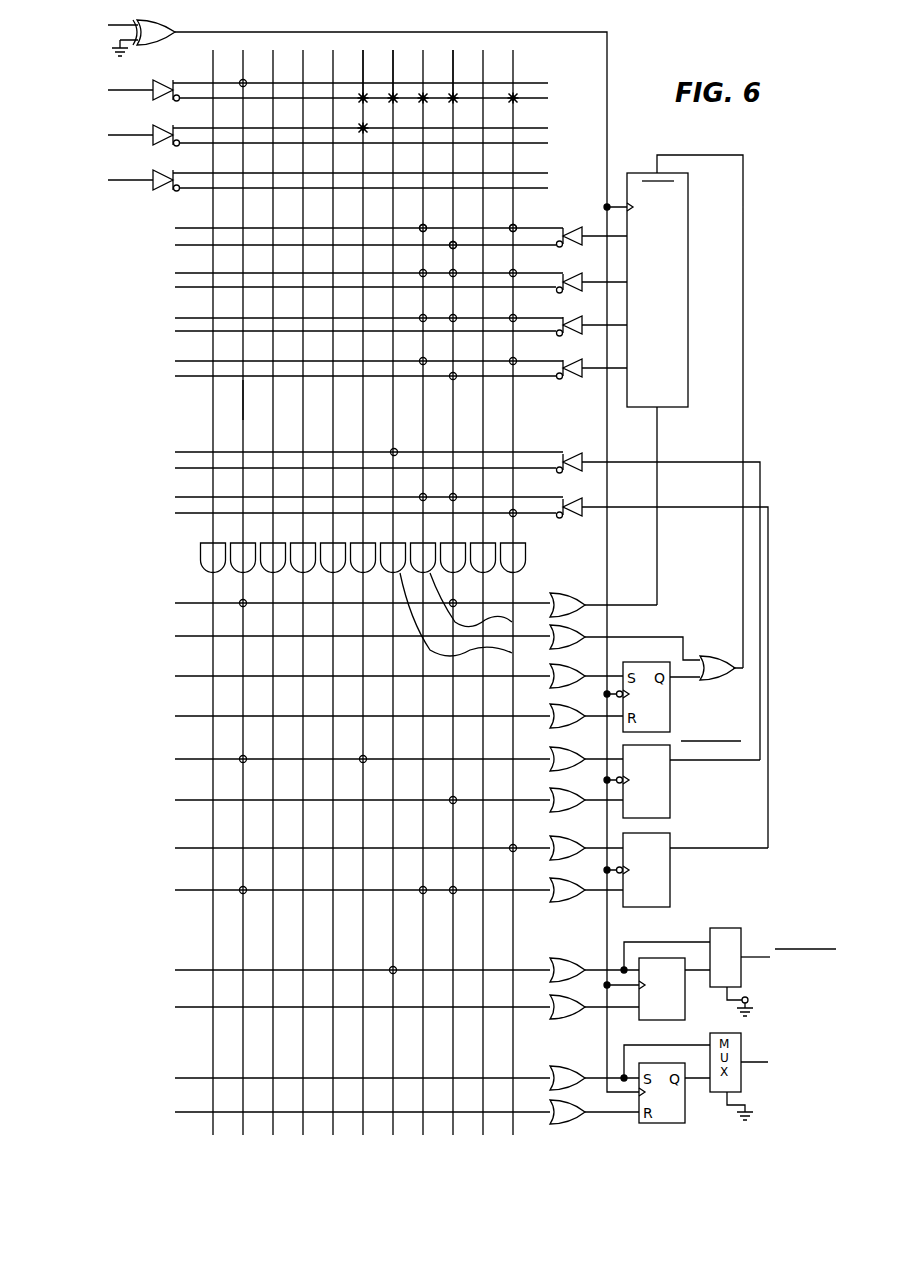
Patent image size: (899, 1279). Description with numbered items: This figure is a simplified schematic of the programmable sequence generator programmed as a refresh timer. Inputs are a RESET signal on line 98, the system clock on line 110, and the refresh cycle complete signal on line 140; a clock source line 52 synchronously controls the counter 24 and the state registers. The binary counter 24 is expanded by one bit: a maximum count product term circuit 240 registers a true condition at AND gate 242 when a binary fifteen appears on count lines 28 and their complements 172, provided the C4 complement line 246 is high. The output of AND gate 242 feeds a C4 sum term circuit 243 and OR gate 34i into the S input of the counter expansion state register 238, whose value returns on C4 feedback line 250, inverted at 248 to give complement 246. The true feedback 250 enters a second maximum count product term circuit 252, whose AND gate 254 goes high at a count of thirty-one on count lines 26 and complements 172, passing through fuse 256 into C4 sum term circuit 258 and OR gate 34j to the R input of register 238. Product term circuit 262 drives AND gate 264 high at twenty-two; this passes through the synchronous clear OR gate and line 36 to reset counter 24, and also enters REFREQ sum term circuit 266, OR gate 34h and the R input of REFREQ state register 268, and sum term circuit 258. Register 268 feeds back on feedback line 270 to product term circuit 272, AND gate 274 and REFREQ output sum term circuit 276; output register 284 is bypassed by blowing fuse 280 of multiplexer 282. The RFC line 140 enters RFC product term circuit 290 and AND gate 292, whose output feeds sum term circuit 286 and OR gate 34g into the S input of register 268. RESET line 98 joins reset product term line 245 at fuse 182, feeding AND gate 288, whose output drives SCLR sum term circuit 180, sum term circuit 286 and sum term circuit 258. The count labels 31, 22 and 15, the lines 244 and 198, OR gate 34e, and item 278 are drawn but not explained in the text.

The system clock signal line 110 is at (119, 26).
The clock source line 52 is at (607, 65).
The RESET signal line 98 is at (104, 91).
The refresh cycle complete signal line 140 is at (116, 136).
The fuse 182 is at (240, 83).
The reset line 244 is at (548, 98).
The maximum count product term circuit 240 is at (512, 118).
The RFC product term circuit 290 is at (363, 52).
The product term circuit 272 is at (393, 54).
The product term circuit 262 is at (453, 54).
The counter 24 is at (688, 272).
The count lines 26 is at (590, 325).
The count lines 28 is at (556, 325).
The second maximum count product term circuit 252 is at (426, 200).
The column 31 is at (430, 220).
The column 22 is at (461, 229).
The column 15 is at (517, 220).
The count line complements 172 is at (500, 335).
The reset product term line 245 is at (243, 398).
The feedback line 270 is at (679, 462).
The C4 feedback line 250 is at (680, 507).
The inverter 248 is at (580, 497).
The C4 complement line 246 is at (546, 513).
The AND gate 242 is at (526, 550).
The AND gate 288 is at (237, 551).
The AND gate 264 is at (462, 572).
The AND gate 292 is at (363, 573).
The AND gate 254 is at (489, 602).
The AND gate 274 is at (474, 618).
The SCLR sum term circuit 180 is at (190, 604).
The line 198 is at (243, 606).
The line 36 is at (658, 574).
The OR gate 34e is at (587, 612).
The REFREQ sum term circuit 286 is at (194, 759).
The REFREQ sum term circuit 266 is at (194, 800).
The C4 sum term circuit 243 is at (194, 848).
The C4 sum term circuit 258 is at (194, 890).
The REFREQ output sum term circuit 276 is at (190, 970).
The OR gate 34g is at (558, 750).
The OR gate 34h is at (558, 790).
The OR gate 34i is at (558, 838).
The OR gate 34j is at (558, 880).
The REFREQ state register 268 is at (670, 784).
The counter expansion state register 238 is at (666, 880).
The fuse 256 is at (426, 892).
The OR gate 278 is at (566, 956).
The output register 284 is at (672, 932).
The multiplexer 282 is at (734, 928).
The fuse 280 is at (749, 1000).